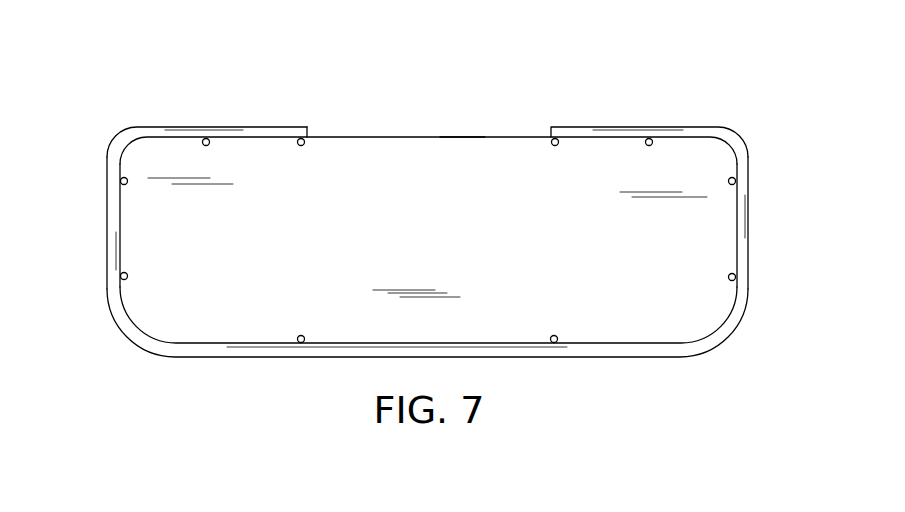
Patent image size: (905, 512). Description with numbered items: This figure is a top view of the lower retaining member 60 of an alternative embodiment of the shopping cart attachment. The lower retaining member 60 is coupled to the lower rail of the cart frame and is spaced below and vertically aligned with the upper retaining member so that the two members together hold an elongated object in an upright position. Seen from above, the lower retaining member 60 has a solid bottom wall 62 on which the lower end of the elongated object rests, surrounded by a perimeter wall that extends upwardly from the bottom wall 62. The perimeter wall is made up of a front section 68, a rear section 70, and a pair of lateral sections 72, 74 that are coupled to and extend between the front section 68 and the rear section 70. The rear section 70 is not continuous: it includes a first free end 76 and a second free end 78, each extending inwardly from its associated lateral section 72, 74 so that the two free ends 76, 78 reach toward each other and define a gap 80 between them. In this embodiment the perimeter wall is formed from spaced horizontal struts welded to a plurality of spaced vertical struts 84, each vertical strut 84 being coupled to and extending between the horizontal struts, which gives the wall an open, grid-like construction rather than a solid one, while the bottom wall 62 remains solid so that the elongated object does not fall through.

The lower retaining member 60 is at (765, 168).
The bottom wall 62 is at (395, 162).
The front section 68 is at (257, 357).
The rear section 70 is at (252, 127).
The lateral section 72 is at (107, 222).
The lateral section 74 is at (748, 223).
The first free end 76 is at (307, 128).
The second free end 78 is at (552, 130).
The gap 80 is at (462, 135).
The vertical struts 84 is at (125, 178).